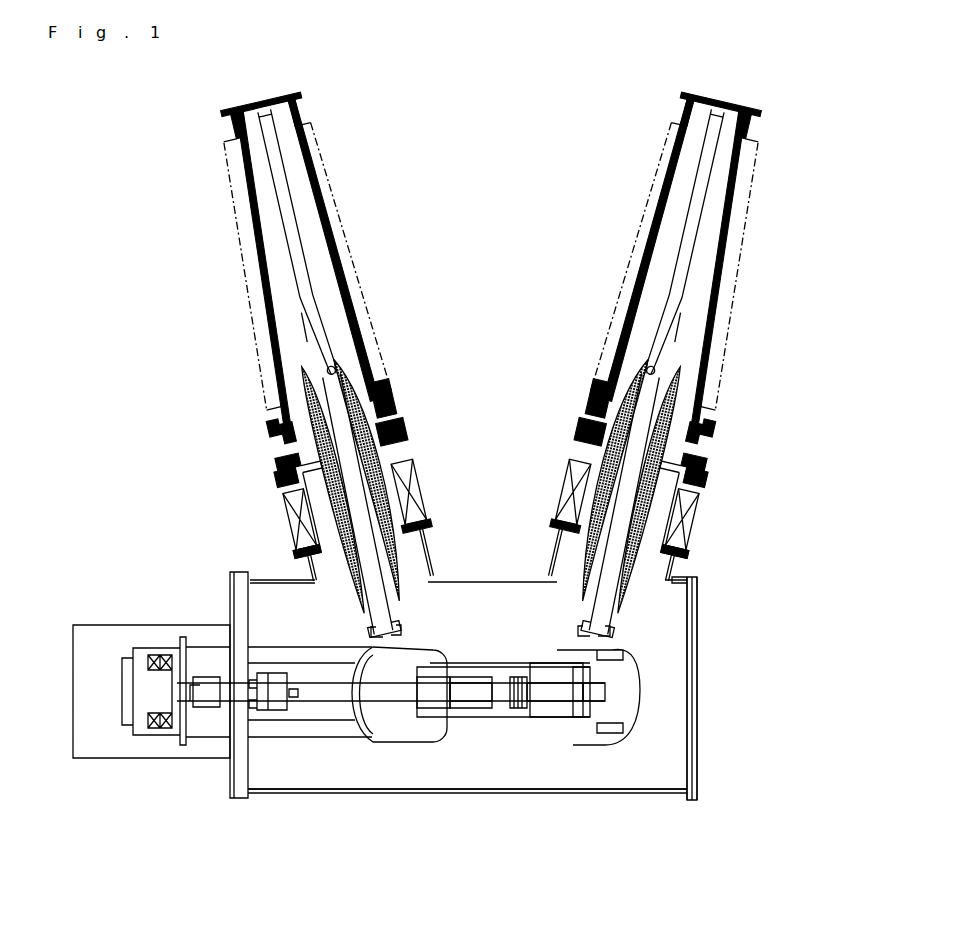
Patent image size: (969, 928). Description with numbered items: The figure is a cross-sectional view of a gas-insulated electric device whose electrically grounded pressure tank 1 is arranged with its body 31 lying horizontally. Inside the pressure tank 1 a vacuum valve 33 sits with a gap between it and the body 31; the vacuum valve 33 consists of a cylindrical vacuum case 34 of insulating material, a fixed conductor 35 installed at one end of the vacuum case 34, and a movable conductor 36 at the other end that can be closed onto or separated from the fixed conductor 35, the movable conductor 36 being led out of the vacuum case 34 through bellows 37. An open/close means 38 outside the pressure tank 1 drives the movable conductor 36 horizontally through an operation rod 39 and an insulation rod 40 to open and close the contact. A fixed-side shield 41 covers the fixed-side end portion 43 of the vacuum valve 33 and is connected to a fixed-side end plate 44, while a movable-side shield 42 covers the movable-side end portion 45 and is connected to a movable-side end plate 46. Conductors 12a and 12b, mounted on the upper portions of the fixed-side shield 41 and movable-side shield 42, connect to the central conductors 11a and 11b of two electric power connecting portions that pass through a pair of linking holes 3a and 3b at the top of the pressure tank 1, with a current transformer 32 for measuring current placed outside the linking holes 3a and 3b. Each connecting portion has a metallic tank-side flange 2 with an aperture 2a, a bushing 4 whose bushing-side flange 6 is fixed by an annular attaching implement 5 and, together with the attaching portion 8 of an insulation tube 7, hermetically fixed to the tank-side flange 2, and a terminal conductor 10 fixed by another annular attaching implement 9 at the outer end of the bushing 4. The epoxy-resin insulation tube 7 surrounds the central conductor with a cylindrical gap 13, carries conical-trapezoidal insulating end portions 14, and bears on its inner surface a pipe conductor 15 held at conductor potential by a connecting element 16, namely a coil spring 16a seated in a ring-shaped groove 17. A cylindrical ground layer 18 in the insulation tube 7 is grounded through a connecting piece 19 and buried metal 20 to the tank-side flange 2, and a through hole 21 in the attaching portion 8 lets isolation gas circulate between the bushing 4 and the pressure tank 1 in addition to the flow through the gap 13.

The pressure tank 1 is at (655, 785).
The tank-side flange 2 is at (305, 490).
The aperture 2a is at (300, 500).
The linking hole 3a is at (415, 506).
The linking hole 3b is at (690, 535).
The bushing 4 is at (335, 220).
The annular attaching implement 5 is at (280, 448).
The bushing-side flange 6 is at (277, 463).
The insulation tube 7 is at (355, 383).
The attaching portion 8 is at (400, 433).
The annular attaching implement 9 is at (300, 113).
The terminal conductor 10 is at (303, 100).
The central conductor 11a is at (318, 282).
The central conductor 11b is at (680, 305).
The conductor 12a is at (410, 630).
The conductor 12b is at (637, 660).
The gap 13 is at (268, 382).
The insulating end portion 14 is at (340, 363).
The pipe conductor 15 is at (305, 398).
The connecting element 16 is at (330, 369).
The coil spring 16a is at (335, 340).
The groove 17 is at (310, 332).
The ground layer 18 is at (410, 492).
The connecting piece 19 is at (298, 520).
The buried metal 20 is at (283, 477).
The through hole 21 is at (388, 412).
The body 31 is at (300, 796).
The current transformer 32 is at (425, 473).
The vacuum valve 33 is at (518, 710).
The vacuum case 34 is at (557, 716).
The fixed conductor 35 is at (541, 712).
The movable conductor 36 is at (466, 712).
The bellows 37 is at (476, 712).
The open/close means 38 is at (156, 655).
The operation rod 39 is at (258, 705).
The insulation rod 40 is at (312, 705).
The fixed-side shield 41 is at (620, 710).
The movable-side shield 42 is at (366, 705).
The fixed-side end portion 43 is at (615, 727).
The fixed-side end plate 44 is at (613, 703).
The movable-side end portion 45 is at (430, 712).
The movable-side end plate 46 is at (412, 715).